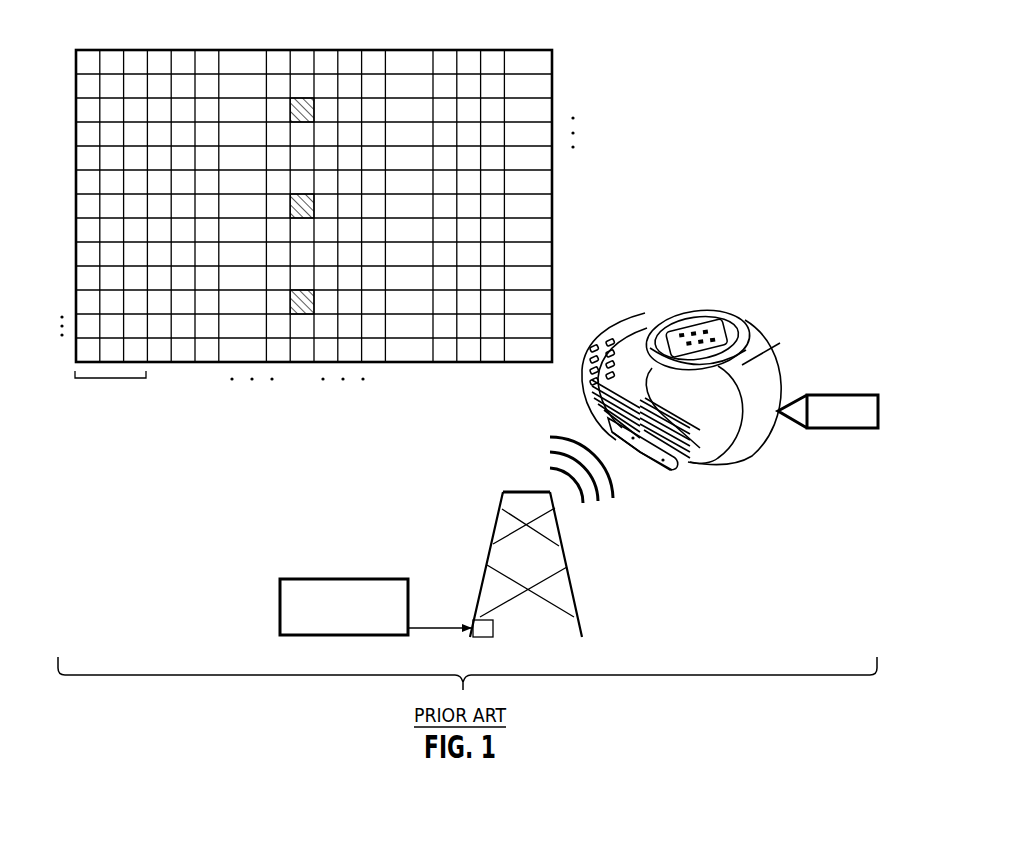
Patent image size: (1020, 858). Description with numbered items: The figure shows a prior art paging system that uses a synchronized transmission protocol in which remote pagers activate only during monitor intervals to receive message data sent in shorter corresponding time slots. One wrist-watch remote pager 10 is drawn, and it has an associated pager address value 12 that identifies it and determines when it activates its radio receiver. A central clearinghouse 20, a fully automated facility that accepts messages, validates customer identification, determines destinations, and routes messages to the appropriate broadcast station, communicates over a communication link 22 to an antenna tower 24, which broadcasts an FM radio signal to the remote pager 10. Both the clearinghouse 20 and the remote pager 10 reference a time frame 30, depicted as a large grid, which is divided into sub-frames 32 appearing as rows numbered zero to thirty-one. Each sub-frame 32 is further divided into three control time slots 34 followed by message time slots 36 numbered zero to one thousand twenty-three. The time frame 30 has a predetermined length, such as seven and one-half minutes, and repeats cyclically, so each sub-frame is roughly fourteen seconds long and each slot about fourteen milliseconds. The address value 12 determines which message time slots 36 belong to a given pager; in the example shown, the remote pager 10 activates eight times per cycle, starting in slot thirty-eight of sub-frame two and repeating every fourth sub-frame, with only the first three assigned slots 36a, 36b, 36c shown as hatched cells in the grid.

The wrist-watch remote pager 10 is at (750, 337).
The pager address value 12 is at (841, 394).
The central clearinghouse 20 is at (340, 577).
The communication link 22 is at (440, 626).
The antenna tower 24 is at (479, 533).
The time frame 30 is at (532, 49).
The sub-frames 32 is at (561, 66).
The control time slots 34 is at (105, 382).
The message time slots 36 is at (547, 280).
The first message time slot associated with remote pager 36a is at (293, 100).
The second message time slot associated with remote pager 36b is at (310, 210).
The third message time slot associated with remote pager 36c is at (307, 313).